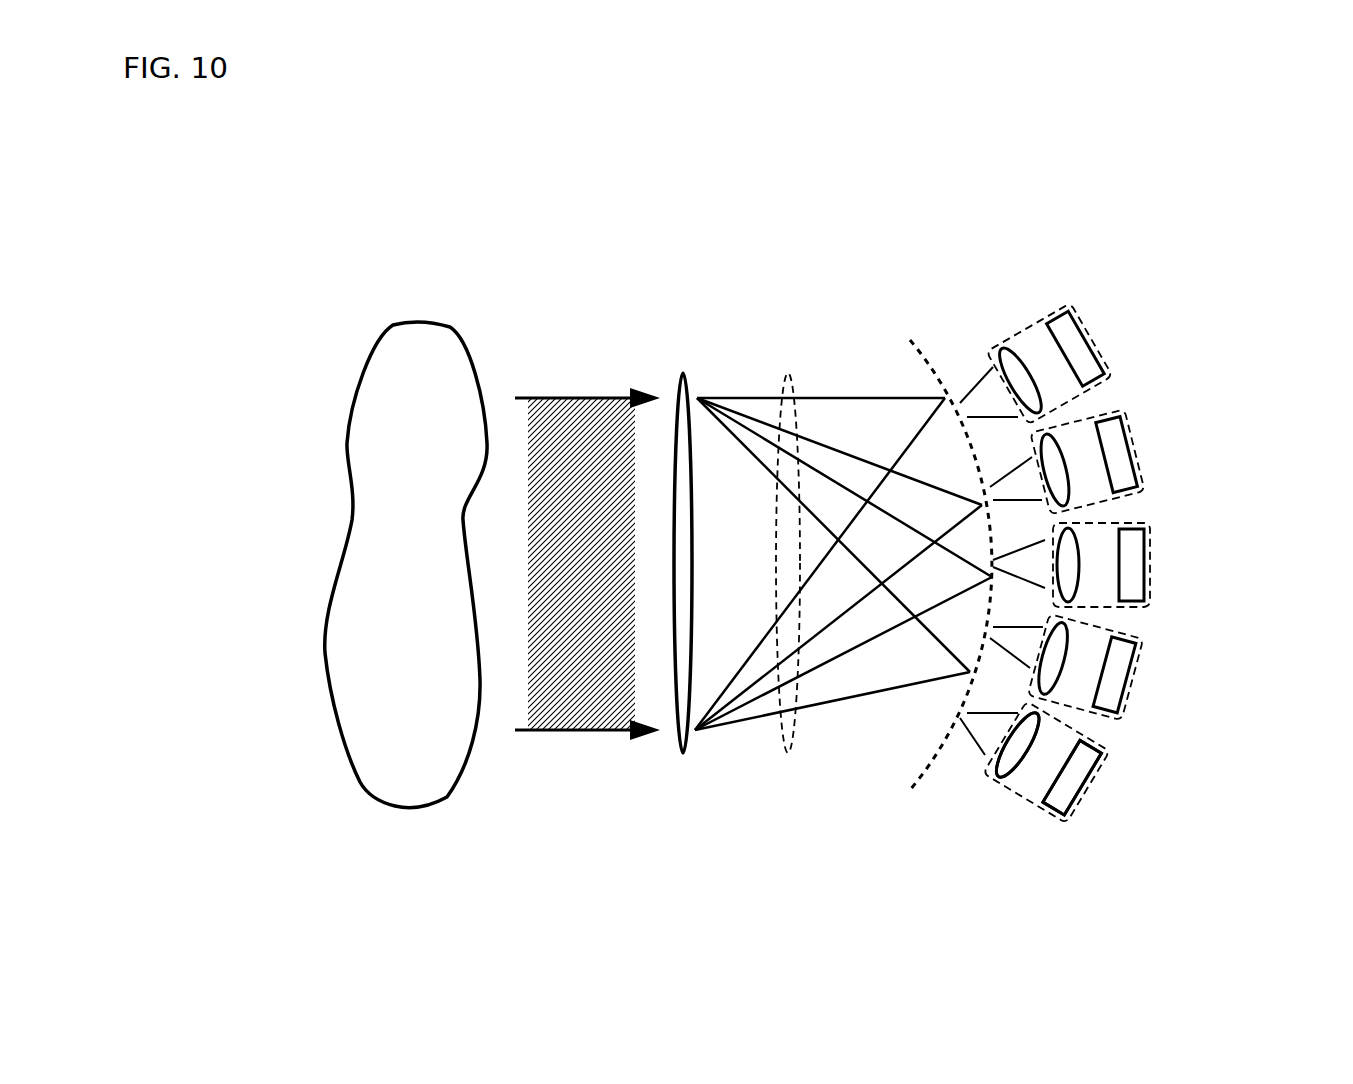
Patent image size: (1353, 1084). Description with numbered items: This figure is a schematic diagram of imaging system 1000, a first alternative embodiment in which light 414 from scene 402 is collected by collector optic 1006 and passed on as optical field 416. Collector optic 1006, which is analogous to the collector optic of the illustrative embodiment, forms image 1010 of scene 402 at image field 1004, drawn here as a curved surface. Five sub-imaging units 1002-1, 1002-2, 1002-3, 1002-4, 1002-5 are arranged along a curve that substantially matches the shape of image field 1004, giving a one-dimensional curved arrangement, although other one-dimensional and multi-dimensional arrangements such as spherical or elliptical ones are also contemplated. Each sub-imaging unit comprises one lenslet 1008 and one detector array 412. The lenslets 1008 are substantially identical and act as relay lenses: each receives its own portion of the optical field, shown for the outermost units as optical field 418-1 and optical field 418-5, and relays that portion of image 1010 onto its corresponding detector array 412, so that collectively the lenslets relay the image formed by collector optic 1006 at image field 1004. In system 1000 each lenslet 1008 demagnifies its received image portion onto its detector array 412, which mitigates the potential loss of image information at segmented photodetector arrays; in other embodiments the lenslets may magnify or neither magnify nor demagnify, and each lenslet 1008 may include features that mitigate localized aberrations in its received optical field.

The imaging system 1000 is at (424, 177).
The scene 402 is at (428, 327).
The light 414 is at (572, 770).
The collector optic 1006 is at (683, 373).
The optical field 416 is at (790, 377).
The image field 1004 is at (910, 523).
The image 1010 is at (951, 565).
The optical field 418-1 is at (996, 388).
The optical field 418-5 is at (992, 737).
The sub-imaging unit 1002-1 is at (1093, 342).
The sub-imaging unit 1002-2 is at (1132, 444).
The sub-imaging unit 1002-3 is at (1151, 557).
The sub-imaging unit 1002-4 is at (1133, 667).
The sub-imaging unit 1002-5 is at (1093, 775).
The detector array 412 is at (1070, 778).
The lenslet 1008 is at (998, 780).